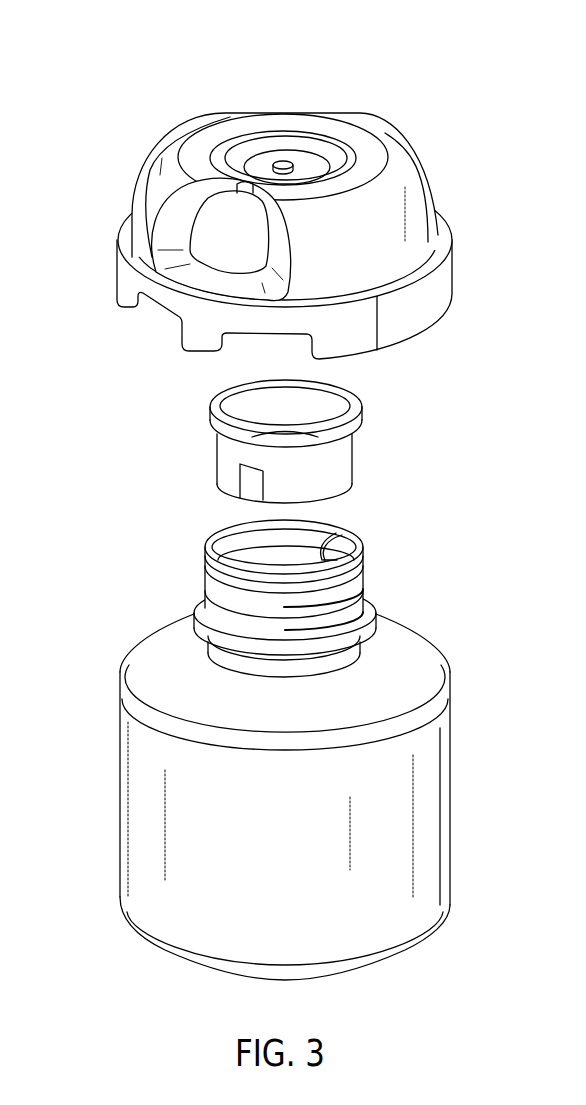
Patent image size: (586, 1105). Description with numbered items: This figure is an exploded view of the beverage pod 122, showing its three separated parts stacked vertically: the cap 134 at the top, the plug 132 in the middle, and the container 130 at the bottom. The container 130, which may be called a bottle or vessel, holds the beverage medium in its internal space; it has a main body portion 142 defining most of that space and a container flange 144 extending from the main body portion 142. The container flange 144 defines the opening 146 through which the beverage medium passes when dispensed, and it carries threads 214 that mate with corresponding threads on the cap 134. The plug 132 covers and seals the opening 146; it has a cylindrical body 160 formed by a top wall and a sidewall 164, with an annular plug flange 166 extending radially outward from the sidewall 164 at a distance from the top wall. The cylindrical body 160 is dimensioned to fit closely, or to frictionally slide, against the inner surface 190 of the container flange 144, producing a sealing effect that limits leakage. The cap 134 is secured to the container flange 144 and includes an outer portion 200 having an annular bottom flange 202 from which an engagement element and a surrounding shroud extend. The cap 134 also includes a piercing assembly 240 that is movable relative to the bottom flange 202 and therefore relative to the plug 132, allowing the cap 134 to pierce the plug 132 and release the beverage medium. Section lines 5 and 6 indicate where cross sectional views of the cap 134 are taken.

The line 5- 5 is at (366, 118).
The line 6- 6 is at (133, 168).
The beverage pod 122 is at (291, 198).
The container 130 is at (277, 750).
The plug 132 is at (282, 446).
The cap 134 is at (422, 220).
The main body portion 142 is at (135, 840).
The container flange 144 is at (353, 588).
The opening 146 is at (250, 560).
The cylindrical body 160 is at (218, 467).
The sidewall 164 is at (335, 487).
The plug flange 166 is at (217, 403).
The inner surface 190 is at (328, 531).
The outer portion 200 is at (150, 208).
The bottom flange 202 is at (212, 137).
The threads 214 is at (213, 611).
The piercing assembly 240 is at (333, 102).